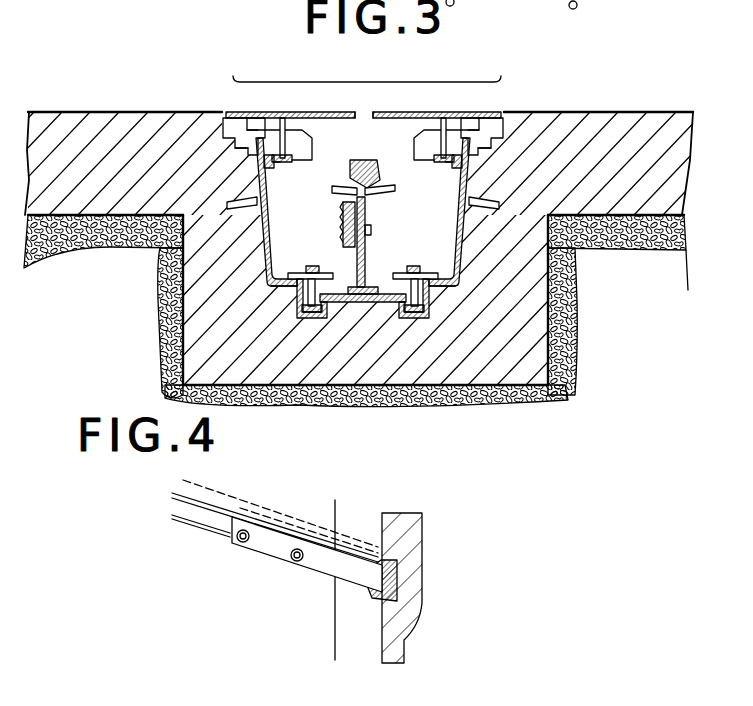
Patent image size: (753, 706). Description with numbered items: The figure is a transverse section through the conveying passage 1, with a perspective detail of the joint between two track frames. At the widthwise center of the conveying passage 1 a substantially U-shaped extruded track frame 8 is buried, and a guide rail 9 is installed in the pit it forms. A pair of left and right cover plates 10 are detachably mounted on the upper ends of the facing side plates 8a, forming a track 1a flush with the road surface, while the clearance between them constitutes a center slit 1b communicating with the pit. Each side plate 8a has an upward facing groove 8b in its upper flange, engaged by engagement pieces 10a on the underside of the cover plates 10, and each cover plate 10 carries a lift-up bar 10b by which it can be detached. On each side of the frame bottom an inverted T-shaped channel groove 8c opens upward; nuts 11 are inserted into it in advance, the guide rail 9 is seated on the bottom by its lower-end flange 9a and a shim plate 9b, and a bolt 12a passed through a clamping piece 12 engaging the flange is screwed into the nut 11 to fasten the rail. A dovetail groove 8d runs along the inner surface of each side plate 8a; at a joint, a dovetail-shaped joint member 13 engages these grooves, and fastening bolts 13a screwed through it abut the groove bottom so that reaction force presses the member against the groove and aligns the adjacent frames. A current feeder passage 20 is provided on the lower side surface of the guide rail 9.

In FIG. 3, the conveying passage 1 is at (143, 112).
In FIG. 3, the track 1a is at (367, 69).
In FIG. 3, the center slit 1b is at (364, 112).
In FIG. 3, the track frame 8 is at (563, 348).
In FIG. 4, the track frame 8 is at (347, 612).
In FIG. 3, the side plate 8a is at (266, 208).
In FIG. 4, the side plate 8a is at (400, 638).
In FIG. 3, the upward facing groove 8b is at (233, 147).
In FIG. 3, the channel groove 8c is at (305, 320).
In FIG. 3, the dovetail groove 8d is at (168, 270).
In FIG. 4, the dovetail groove 8d is at (398, 587).
In FIG. 3, the guide rail 9 is at (378, 168).
In FIG. 3, the lower-end flange 9a is at (372, 275).
In FIG. 3, the shim plate 9b is at (360, 302).
In FIG. 3, the cover plate 10 is at (321, 112).
In FIG. 3, the engagement piece 10a is at (250, 123).
In FIG. 3, the lift-up bar 10b is at (304, 131).
In FIG. 3, the nut 11 is at (307, 313).
In FIG. 3, the clamping piece 12 is at (295, 271).
In FIG. 3, the bolt 12a is at (311, 270).
In FIG. 4, the joint member 13 is at (318, 570).
In FIG. 4, the fastening bolt 13a is at (292, 558).
In FIG. 3, the current feeder passage 20 is at (366, 210).